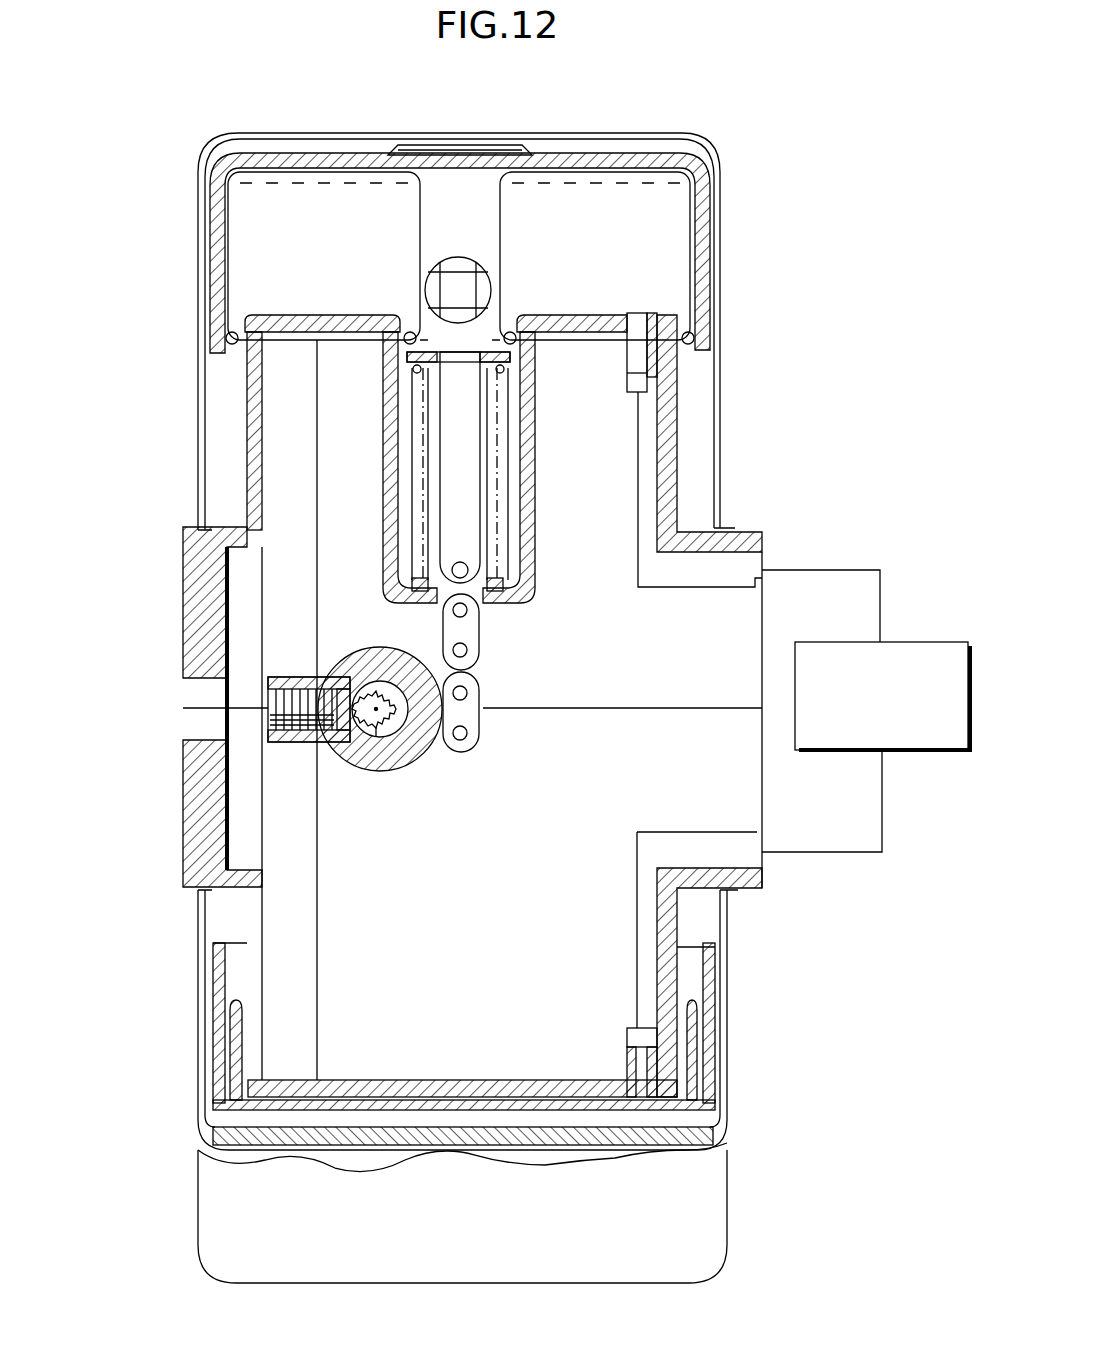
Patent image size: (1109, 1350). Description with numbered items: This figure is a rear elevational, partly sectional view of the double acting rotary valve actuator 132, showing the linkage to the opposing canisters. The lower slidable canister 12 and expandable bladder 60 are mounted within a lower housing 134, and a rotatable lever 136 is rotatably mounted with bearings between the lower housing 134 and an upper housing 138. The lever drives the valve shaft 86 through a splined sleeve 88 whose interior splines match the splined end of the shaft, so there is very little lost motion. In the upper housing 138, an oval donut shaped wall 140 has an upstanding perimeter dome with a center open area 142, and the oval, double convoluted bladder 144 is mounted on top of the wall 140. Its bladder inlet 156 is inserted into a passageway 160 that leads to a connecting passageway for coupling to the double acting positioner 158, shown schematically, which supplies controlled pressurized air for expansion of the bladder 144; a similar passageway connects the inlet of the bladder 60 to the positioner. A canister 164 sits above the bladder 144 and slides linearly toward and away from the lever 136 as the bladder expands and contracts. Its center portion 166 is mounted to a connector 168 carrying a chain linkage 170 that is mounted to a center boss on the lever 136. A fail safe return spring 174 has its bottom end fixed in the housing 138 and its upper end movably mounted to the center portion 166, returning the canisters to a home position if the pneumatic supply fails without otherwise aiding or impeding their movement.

The lower slidable canister 12 is at (220, 972).
The expandable bladder 60 is at (237, 1047).
The valve shaft 86 is at (383, 687).
The splined sleeve 88 is at (397, 738).
The double acting rotary valve actuator 132 is at (148, 324).
The lower housing 134 is at (182, 847).
The rotatable lever 136 is at (375, 772).
The upper housing 138 is at (180, 590).
The oval donut shaped wall 140 is at (267, 422).
The center open area 142 is at (407, 442).
The double convoluted bladder 144 is at (290, 200).
The bladder inlet 156 is at (640, 330).
The double acting positioner 158 is at (917, 640).
The passageway 160 is at (645, 410).
The canister 164 is at (553, 157).
The center portion 166 is at (468, 217).
The connector 168 is at (455, 502).
The chain linkage 170 is at (483, 640).
The fail safe return spring 174 is at (513, 362).